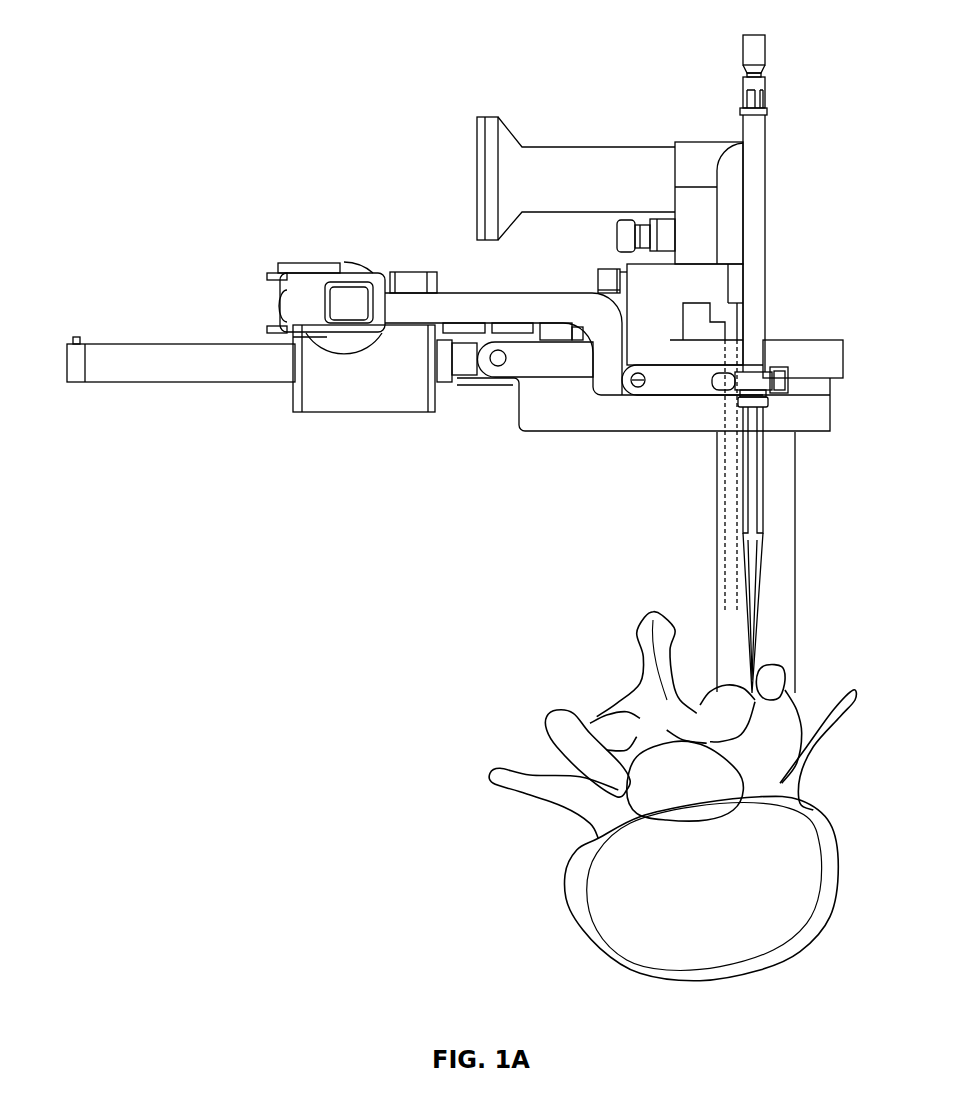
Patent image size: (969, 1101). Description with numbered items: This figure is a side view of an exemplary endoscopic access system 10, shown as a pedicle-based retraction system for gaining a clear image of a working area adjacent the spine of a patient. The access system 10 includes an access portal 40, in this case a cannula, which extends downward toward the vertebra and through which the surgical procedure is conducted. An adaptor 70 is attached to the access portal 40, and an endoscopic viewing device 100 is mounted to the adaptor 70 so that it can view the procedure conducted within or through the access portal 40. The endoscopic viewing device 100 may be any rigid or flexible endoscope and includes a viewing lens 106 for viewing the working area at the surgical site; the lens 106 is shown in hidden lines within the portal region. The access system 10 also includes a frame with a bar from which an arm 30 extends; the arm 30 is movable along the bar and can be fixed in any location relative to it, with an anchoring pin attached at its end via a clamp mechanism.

The access system 10 is at (180, 45).
The arm 30 is at (513, 301).
The access portal 40 is at (717, 503).
The adaptor 70 is at (797, 348).
The endoscopic viewing device 100 is at (577, 155).
The viewing lens 106 is at (718, 627).